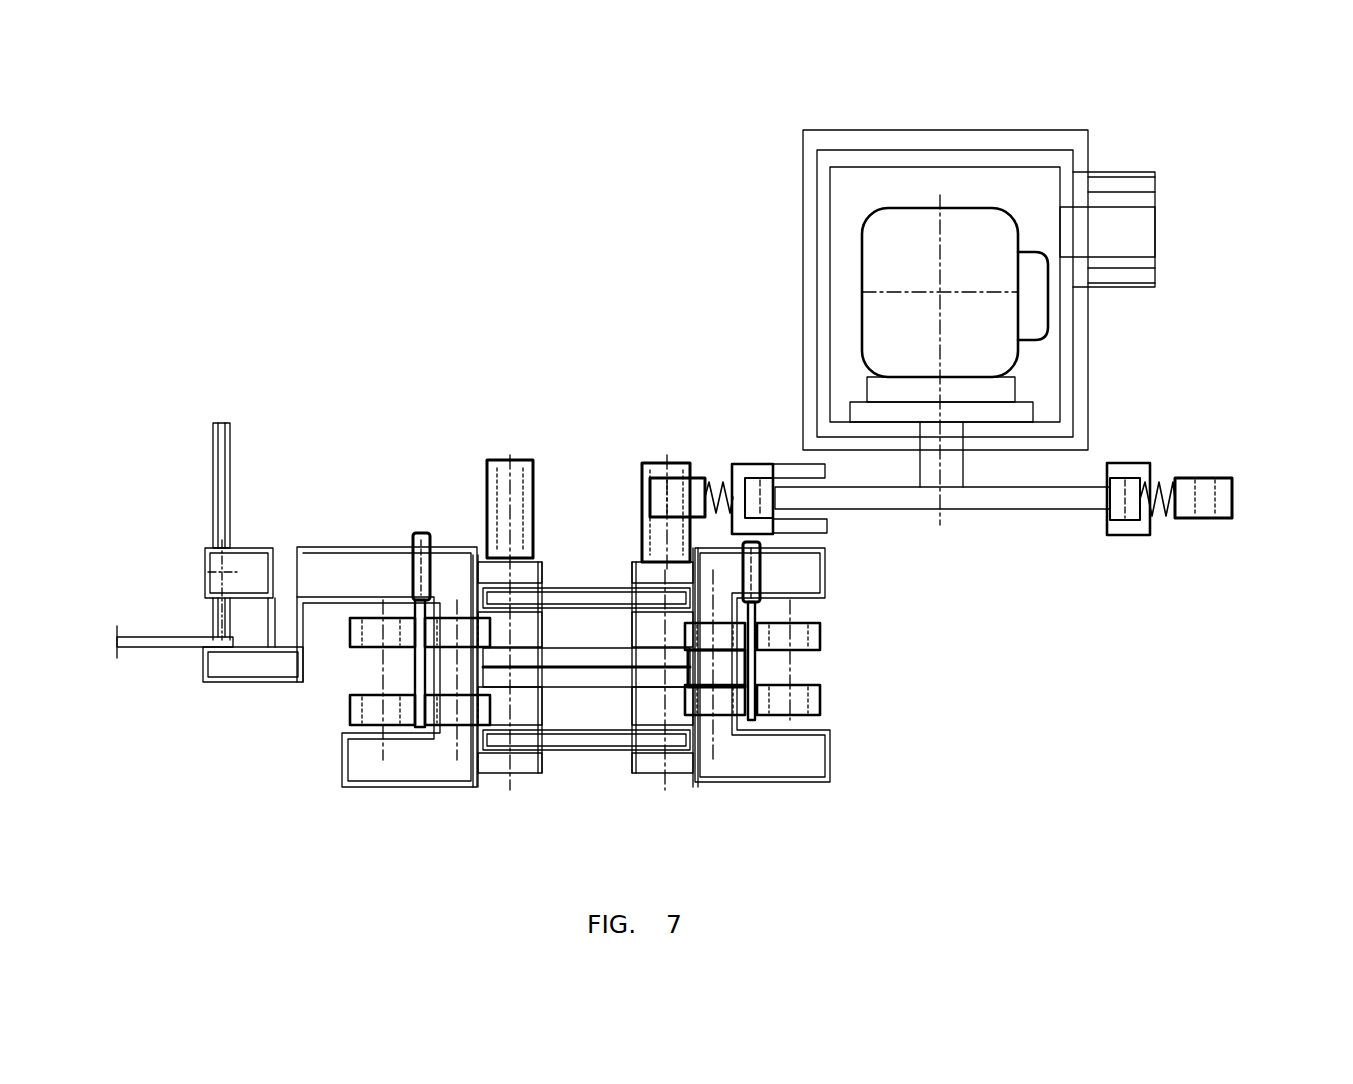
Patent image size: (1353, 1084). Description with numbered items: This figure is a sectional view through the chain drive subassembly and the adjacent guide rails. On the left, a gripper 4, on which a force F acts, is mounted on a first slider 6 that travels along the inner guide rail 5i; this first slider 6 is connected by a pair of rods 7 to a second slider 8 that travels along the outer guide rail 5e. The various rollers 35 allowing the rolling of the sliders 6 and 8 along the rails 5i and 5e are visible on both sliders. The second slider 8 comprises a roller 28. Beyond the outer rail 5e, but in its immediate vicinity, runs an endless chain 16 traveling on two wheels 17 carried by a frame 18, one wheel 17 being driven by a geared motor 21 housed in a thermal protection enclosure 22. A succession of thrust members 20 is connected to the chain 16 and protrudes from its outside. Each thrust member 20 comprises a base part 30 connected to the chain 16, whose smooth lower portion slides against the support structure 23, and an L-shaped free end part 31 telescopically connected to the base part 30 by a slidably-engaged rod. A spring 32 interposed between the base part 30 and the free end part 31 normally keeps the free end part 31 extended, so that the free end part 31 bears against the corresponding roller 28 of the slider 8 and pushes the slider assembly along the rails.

The gripper 4 is at (200, 672).
The force F is at (162, 637).
The first slider 6 is at (383, 545).
The rollers 35 is at (430, 540).
The inner guide rail 5i is at (415, 668).
The outer guide rail 5e is at (757, 667).
The rods 7 is at (567, 650).
The second slider 8 is at (745, 782).
The roller 28 is at (640, 500).
The free end part 31 is at (655, 475).
The spring 32 is at (715, 480).
The base part 30 is at (745, 475).
The endless chain 16 is at (770, 478).
The support structure 23 is at (797, 460).
The thrust member 20 is at (707, 462).
The wheels 17 is at (1012, 500).
The frame 18 is at (865, 387).
The geared motor 21 is at (940, 208).
The thermal protection enclosure 22 is at (1060, 130).